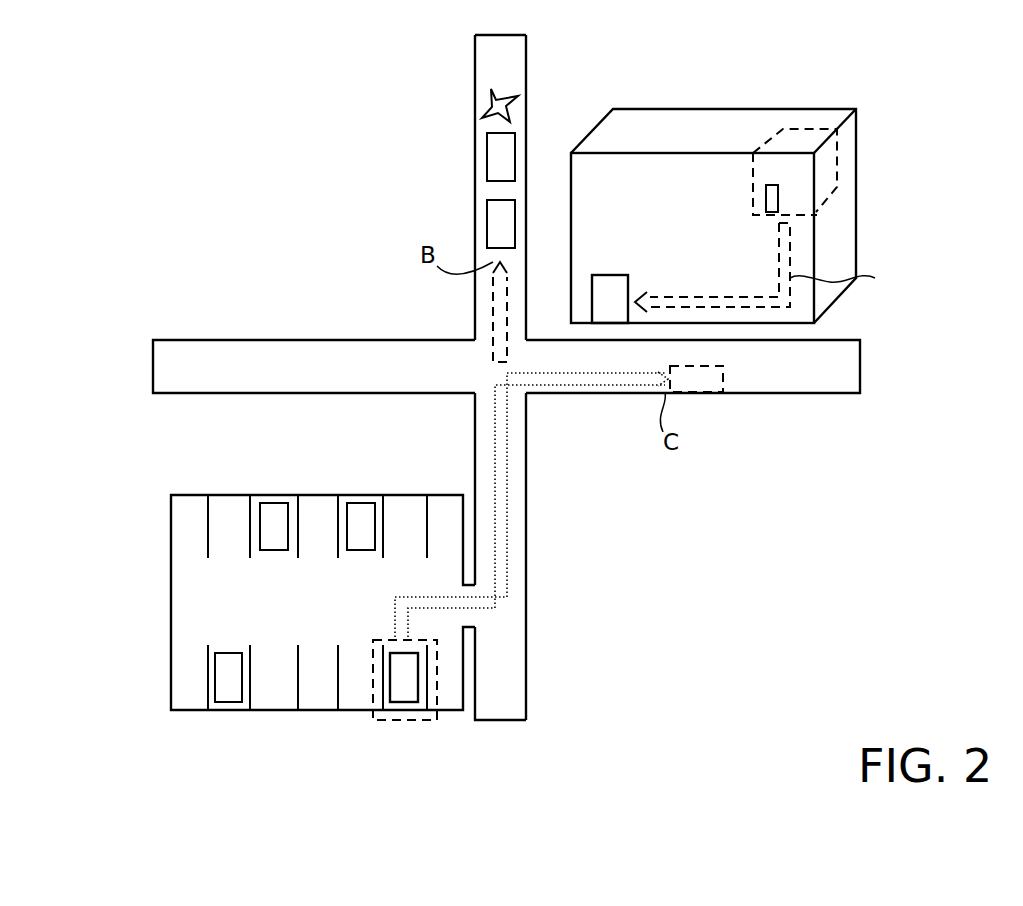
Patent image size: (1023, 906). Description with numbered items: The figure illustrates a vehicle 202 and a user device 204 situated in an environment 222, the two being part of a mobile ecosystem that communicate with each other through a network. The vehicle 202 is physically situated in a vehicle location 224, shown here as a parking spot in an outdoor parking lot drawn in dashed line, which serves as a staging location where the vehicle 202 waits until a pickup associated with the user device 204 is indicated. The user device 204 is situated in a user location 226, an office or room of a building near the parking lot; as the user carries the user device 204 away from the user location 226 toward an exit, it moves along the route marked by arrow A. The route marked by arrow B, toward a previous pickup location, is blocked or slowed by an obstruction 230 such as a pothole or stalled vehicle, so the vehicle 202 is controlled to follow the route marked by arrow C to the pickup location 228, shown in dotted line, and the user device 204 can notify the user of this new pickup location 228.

The environment 222 is at (227, 104).
The obstruction 230 is at (487, 96).
The user location 226 is at (796, 128).
The user device 204 is at (766, 196).
The pickup location 228 is at (726, 368).
The vehicle 202 is at (408, 702).
The vehicle location 224 is at (380, 722).